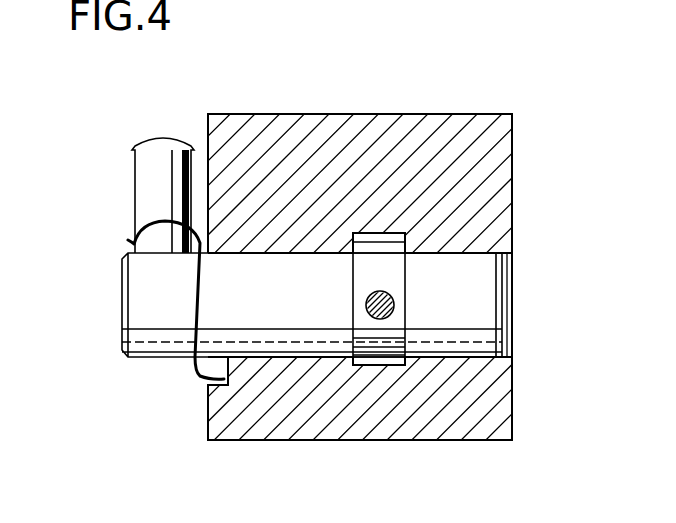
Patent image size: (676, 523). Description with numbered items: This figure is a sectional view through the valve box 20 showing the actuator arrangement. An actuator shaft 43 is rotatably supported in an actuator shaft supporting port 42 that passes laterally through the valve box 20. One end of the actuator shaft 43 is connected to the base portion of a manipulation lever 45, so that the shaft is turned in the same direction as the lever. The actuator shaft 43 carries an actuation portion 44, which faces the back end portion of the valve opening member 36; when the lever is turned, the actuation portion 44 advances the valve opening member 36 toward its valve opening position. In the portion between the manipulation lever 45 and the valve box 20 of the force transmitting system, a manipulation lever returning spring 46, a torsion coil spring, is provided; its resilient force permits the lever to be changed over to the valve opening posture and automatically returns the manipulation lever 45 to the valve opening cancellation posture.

The valve box 20 is at (317, 438).
The valve opening member 36 is at (380, 313).
The actuator shaft supporting port 42 is at (325, 343).
The actuator shaft 43 is at (269, 360).
The actuation portion 44 is at (380, 253).
The manipulation lever 45 is at (163, 140).
The manipulation lever returning spring 46 is at (195, 298).